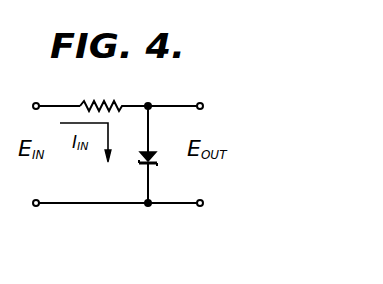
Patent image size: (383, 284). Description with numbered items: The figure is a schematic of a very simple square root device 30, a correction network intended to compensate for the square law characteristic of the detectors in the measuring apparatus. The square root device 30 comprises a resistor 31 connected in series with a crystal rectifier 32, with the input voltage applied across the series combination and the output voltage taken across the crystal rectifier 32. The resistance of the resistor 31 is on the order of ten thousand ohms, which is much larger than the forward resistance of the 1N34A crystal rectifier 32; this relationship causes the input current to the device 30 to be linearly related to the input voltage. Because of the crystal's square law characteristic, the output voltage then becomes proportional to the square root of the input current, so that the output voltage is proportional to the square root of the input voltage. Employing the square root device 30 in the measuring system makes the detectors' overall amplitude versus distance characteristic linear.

The square root device 30 is at (98, 239).
The resistor 31 is at (121, 79).
The crystal rectifier 32 is at (155, 158).